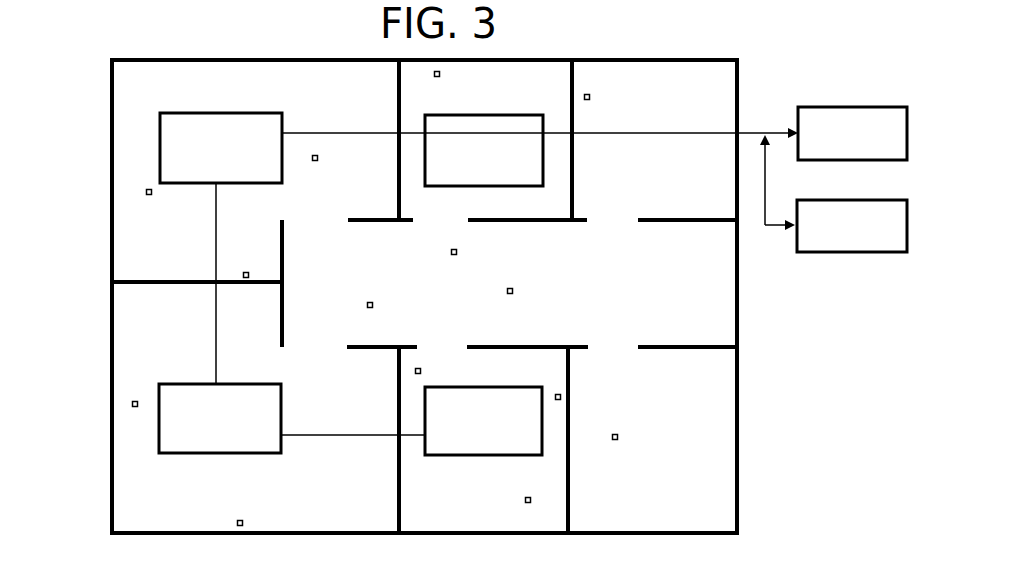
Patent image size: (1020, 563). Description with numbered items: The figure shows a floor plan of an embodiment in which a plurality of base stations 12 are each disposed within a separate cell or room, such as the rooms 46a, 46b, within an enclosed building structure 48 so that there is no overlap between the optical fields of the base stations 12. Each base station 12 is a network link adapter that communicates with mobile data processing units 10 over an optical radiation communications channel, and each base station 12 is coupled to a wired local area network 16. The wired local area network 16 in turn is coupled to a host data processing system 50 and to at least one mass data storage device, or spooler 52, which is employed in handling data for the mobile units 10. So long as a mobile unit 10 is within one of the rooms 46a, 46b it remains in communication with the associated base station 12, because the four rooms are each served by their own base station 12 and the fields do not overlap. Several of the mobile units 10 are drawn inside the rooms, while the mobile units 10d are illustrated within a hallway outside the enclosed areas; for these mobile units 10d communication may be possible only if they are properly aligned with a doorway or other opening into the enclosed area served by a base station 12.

The mobile data processing unit 10 is at (151, 197).
The mobile unit in hallway 10d is at (371, 301).
The base station 12 is at (212, 113).
The wired local area network 16 is at (753, 133).
The room 46a is at (112, 262).
The room 46b is at (112, 335).
The building 48 is at (392, 311).
The host data processing system 50 is at (846, 107).
The spooler 52 is at (847, 253).